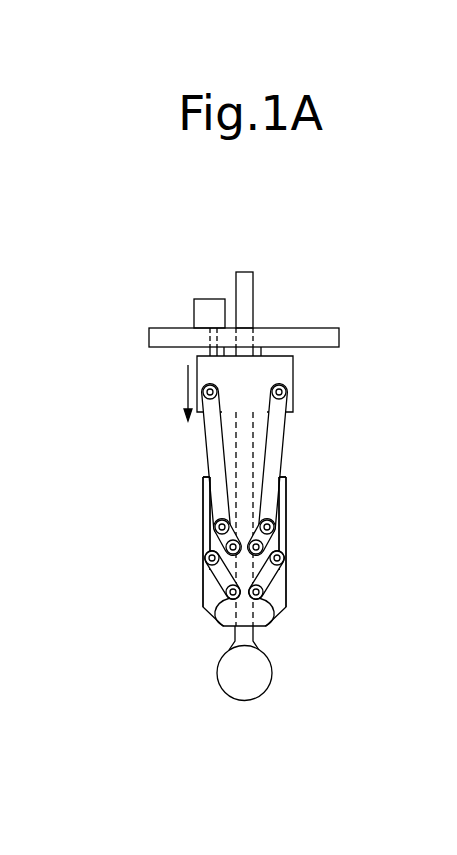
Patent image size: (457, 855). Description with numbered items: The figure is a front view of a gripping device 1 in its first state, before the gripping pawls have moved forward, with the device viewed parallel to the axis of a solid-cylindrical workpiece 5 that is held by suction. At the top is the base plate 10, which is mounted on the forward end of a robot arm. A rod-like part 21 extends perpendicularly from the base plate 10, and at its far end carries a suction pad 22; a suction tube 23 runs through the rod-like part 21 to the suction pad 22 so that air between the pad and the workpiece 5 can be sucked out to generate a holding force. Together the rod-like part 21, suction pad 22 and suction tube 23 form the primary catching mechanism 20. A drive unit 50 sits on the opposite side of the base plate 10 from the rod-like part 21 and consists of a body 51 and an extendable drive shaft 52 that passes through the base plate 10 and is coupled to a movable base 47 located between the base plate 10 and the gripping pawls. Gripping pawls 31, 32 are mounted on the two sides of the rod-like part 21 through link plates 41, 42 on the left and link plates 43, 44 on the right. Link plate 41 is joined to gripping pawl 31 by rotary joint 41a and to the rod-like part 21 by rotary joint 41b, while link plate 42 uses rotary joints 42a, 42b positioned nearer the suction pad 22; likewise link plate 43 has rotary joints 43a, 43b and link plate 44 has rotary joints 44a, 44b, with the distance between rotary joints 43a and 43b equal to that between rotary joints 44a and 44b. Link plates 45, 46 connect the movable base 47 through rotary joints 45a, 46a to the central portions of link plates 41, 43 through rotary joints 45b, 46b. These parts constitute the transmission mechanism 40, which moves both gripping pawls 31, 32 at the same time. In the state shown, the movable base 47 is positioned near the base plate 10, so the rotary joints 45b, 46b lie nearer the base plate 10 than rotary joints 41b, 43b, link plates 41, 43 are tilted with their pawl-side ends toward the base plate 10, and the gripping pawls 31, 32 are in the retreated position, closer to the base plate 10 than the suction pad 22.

The gripping device 1 is at (262, 515).
The workpiece 5 is at (258, 682).
The base plate 10 is at (315, 334).
The primary catching mechanism 20 is at (275, 571).
The rod-like part 21 is at (215, 650).
The suction pad 22 is at (257, 648).
The suction tube 23 is at (250, 288).
The gripping pawl 31 is at (215, 610).
The gripping pawl 32 is at (286, 588).
The transmission mechanism 40 is at (275, 575).
The link plate 41 is at (215, 528).
The rotary joint 41a is at (207, 513).
The rotary joint 41b is at (224, 548).
The link plate 42 is at (215, 593).
The rotary joint 42a is at (205, 558).
The rotary joint 42b is at (222, 630).
The link plate 43 is at (275, 527).
The rotary joint 43a is at (282, 512).
The rotary joint 43b is at (265, 541).
The link plate 44 is at (283, 578).
The rotary joint 44a is at (285, 558).
The rotary joint 44b is at (270, 636).
The link plate 45 is at (205, 433).
The rotary joint 45a is at (206, 384).
The rotary joint 45b is at (205, 510).
The link plate 46 is at (283, 434).
The rotary joint 46a is at (283, 393).
The rotary joint 46b is at (280, 498).
The movable base 47 is at (283, 366).
The drive unit 50 is at (173, 300).
The body 51 is at (208, 302).
The drive shaft 52 is at (209, 350).